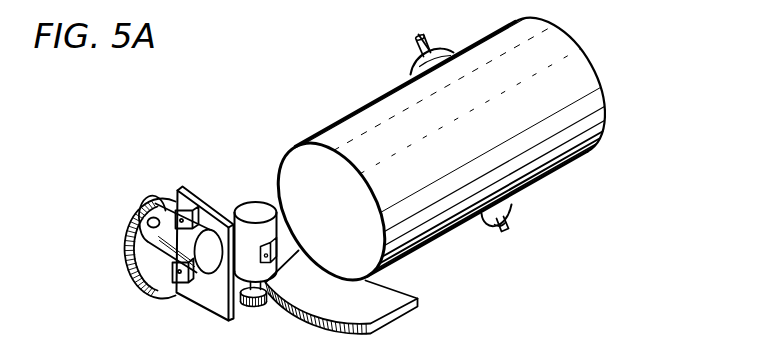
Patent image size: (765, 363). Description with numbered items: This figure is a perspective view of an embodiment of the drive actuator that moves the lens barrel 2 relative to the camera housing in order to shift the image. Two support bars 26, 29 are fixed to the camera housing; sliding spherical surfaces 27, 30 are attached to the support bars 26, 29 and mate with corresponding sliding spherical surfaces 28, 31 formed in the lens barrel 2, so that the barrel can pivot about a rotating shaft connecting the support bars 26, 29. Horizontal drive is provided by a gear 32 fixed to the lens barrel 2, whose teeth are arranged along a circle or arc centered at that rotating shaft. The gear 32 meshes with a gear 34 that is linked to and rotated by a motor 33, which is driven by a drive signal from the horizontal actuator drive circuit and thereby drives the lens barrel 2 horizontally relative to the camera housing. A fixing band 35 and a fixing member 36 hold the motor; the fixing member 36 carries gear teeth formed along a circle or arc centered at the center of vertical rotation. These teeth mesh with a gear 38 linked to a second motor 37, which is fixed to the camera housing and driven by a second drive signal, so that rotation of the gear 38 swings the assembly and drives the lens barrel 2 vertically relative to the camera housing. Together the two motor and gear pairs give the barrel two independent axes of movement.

The lens barrel 2 is at (358, 118).
The support bar 26 is at (427, 38).
The sliding spherical surface 27 is at (418, 54).
The sliding spherical surface 28 is at (413, 68).
The support bar 29 is at (497, 230).
The sliding spherical surface 30 is at (505, 222).
The sliding spherical surface 31 is at (512, 204).
The gear 32 is at (404, 312).
The motor 33 is at (255, 204).
The gear 34 is at (254, 306).
The fixing band 35 is at (276, 243).
The fixing member 36 is at (197, 202).
The motor 37 is at (205, 267).
The gear 38 is at (137, 207).